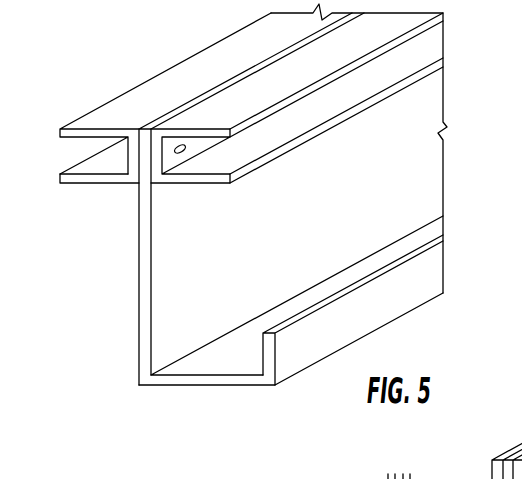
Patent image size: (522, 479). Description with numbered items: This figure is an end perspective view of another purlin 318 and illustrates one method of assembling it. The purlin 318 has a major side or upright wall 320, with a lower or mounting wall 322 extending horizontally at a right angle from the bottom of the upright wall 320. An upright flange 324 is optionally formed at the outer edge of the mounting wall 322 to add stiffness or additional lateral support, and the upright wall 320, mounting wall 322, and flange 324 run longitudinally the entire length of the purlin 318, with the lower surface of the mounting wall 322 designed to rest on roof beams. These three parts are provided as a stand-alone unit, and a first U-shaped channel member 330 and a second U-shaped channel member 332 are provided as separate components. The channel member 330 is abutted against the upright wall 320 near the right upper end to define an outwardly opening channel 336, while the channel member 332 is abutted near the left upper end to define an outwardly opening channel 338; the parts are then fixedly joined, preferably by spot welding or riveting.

The purlin 318 is at (234, 224).
The upright wall 320 is at (152, 312).
The mounting wall 322 is at (200, 387).
The upright flange 324 is at (300, 356).
The first U-shaped channel member 330 is at (190, 177).
The second U-shaped channel member 332 is at (98, 185).
The outwardly opening channel 336 is at (303, 114).
The outwardly opening channel 338 is at (80, 168).